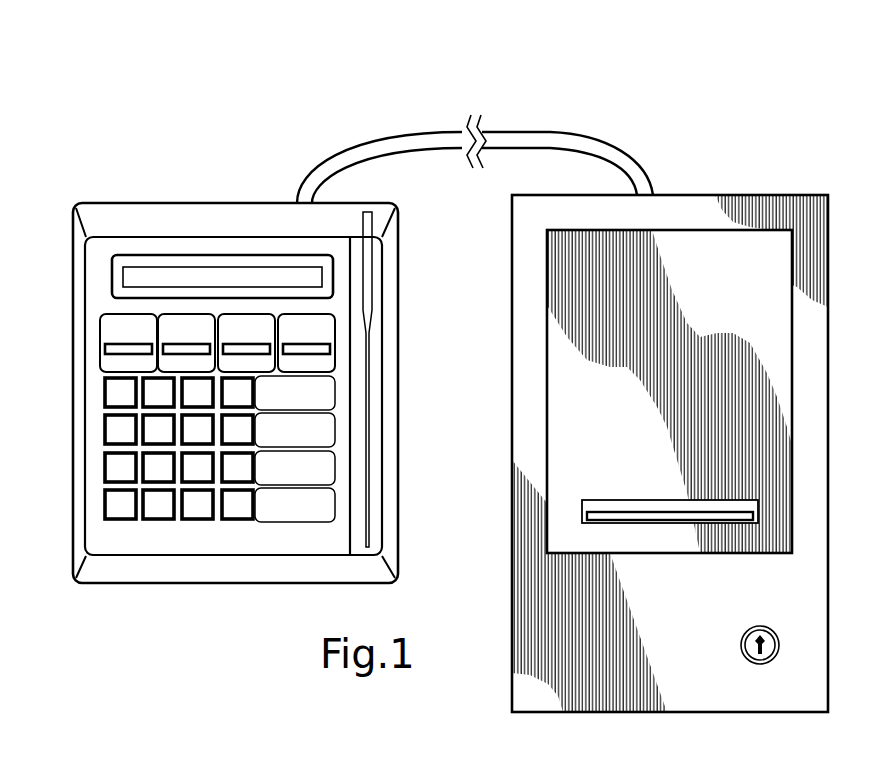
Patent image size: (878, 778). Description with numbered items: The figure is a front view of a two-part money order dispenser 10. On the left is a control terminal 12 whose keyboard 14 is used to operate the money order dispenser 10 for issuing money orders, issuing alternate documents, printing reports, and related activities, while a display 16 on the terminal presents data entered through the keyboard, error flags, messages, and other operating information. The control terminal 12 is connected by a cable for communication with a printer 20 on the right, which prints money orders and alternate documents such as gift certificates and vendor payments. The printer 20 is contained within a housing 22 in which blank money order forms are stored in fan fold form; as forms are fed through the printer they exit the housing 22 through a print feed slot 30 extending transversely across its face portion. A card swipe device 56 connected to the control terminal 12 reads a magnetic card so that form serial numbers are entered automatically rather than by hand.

The money order dispenser 10 is at (332, 92).
The control terminal 12 is at (232, 570).
The keyboard 14 is at (322, 432).
The display 16 is at (198, 272).
The printer 20 is at (695, 413).
The housing 22 is at (810, 395).
The print feed slot 30 is at (643, 513).
The card swipe device 56 is at (367, 268).